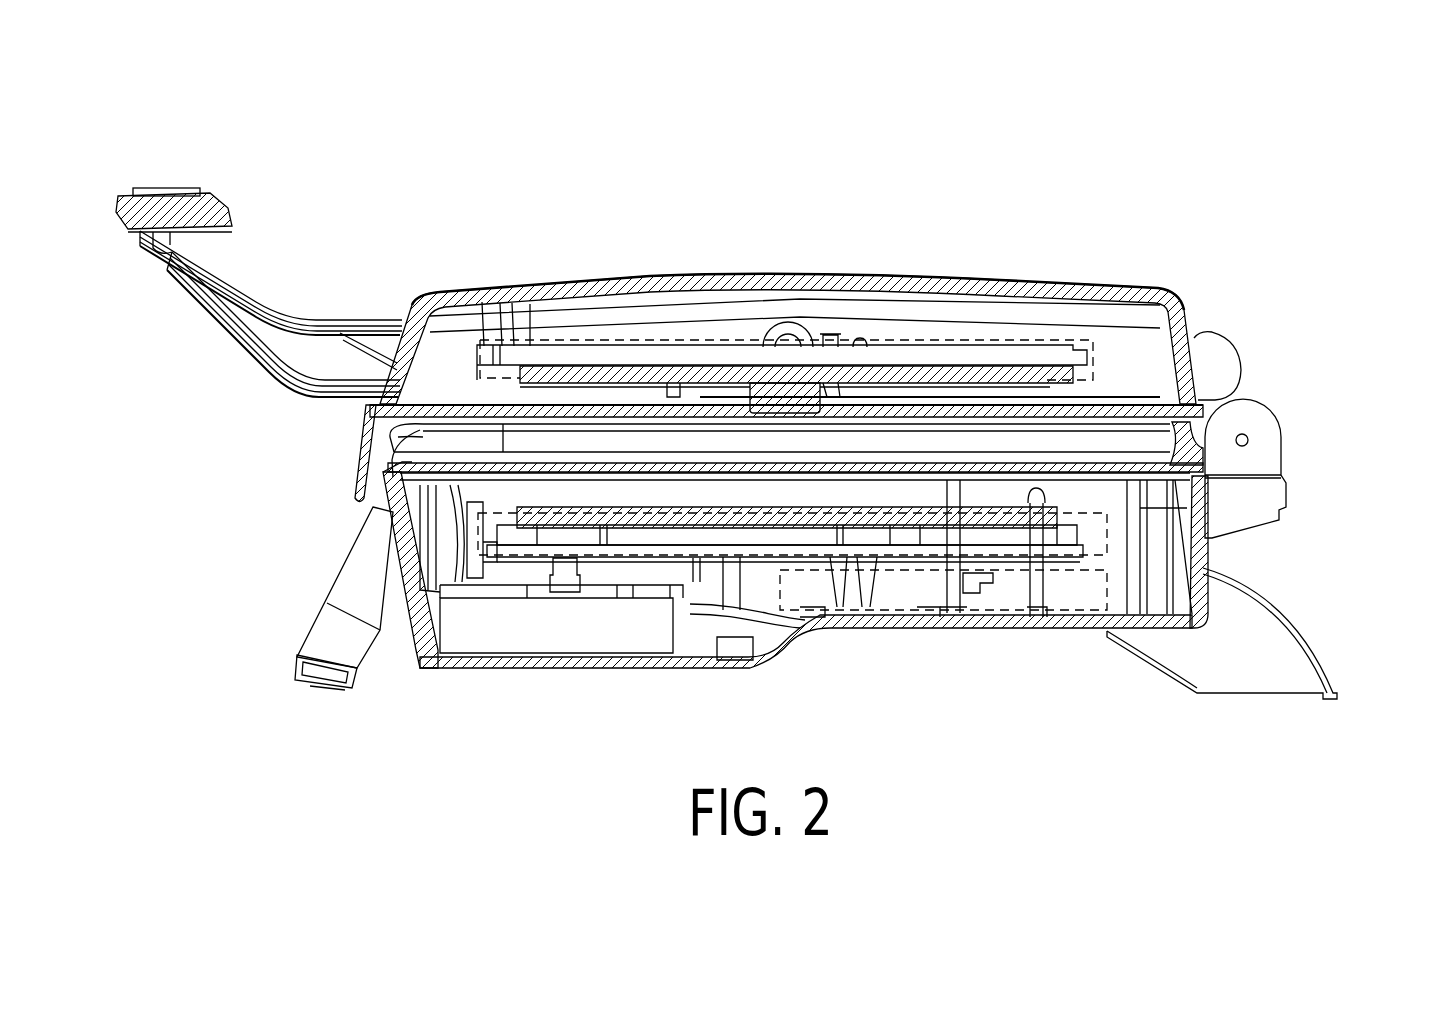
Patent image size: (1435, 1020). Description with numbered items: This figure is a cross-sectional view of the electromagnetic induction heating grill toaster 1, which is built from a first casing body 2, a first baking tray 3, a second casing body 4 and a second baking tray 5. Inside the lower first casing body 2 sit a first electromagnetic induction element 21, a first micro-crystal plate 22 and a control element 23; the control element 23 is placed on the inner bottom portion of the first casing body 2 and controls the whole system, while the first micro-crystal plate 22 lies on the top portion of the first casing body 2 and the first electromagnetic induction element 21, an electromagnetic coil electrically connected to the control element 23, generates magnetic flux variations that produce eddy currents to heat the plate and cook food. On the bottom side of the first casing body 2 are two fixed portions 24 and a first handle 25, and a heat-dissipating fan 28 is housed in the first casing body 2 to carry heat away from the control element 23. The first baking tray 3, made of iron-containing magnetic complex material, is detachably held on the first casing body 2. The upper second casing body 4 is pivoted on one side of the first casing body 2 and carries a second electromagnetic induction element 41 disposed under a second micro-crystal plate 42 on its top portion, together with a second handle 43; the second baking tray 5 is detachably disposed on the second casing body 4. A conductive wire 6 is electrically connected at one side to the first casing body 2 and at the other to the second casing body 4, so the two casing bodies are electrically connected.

The electromagnetic induction heating grill toaster 1 is at (655, 252).
The first casing body 2 is at (413, 662).
The first baking tray 3 is at (369, 491).
The second casing body 4 is at (408, 305).
The second baking tray 5 is at (358, 413).
The conductive wire 6 is at (1238, 350).
The first electromagnetic induction element 21 is at (786, 615).
The first micro-crystal plate 22 is at (987, 475).
The control element 23 is at (1070, 595).
The fixed portions 24 is at (1250, 622).
The first handle 25 is at (296, 660).
The heat-dissipating fan 28 is at (613, 630).
The second electromagnetic induction element 41 is at (905, 300).
The second micro-crystal plate 42 is at (1030, 405).
The second handle 43 is at (205, 207).